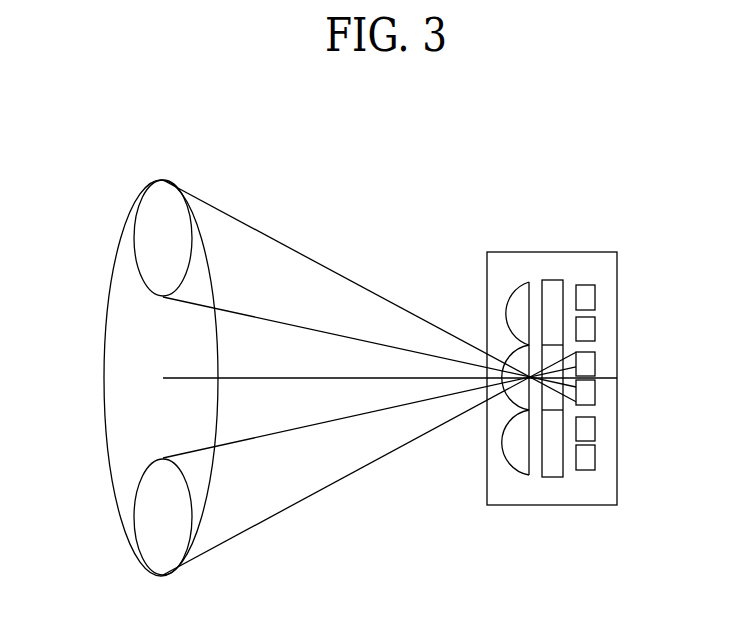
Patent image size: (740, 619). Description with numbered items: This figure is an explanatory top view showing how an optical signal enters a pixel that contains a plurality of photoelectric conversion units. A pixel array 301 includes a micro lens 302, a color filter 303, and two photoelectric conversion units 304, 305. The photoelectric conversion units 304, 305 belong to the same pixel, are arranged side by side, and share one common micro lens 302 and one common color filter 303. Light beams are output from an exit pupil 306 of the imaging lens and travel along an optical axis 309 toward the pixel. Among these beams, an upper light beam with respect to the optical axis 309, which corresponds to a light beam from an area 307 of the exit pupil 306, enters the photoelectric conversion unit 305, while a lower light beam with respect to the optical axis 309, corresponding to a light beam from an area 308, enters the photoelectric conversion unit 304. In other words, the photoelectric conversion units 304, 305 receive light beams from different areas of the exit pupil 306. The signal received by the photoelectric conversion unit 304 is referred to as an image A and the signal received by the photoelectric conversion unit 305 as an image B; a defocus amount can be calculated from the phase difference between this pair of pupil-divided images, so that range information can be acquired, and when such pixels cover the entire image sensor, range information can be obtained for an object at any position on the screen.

The pixel array 301 is at (618, 265).
The micro lens 302 is at (507, 292).
The color filter 303 is at (552, 278).
The photoelectric conversion unit 304 is at (596, 358).
The photoelectric conversion unit 305 is at (596, 395).
The exit pupil 306 is at (103, 380).
The area 307 is at (133, 246).
The area 308 is at (133, 512).
The optical axis 309 is at (343, 378).